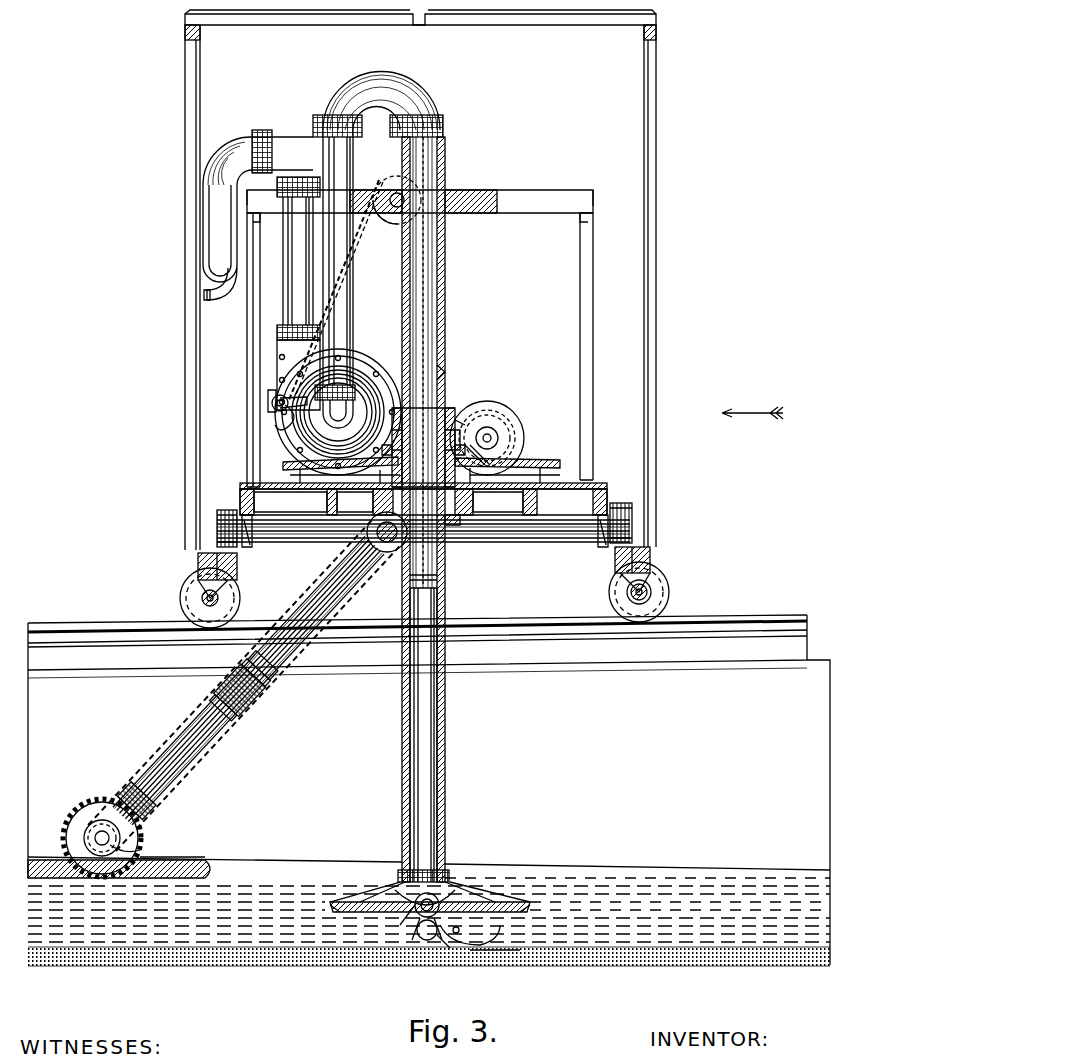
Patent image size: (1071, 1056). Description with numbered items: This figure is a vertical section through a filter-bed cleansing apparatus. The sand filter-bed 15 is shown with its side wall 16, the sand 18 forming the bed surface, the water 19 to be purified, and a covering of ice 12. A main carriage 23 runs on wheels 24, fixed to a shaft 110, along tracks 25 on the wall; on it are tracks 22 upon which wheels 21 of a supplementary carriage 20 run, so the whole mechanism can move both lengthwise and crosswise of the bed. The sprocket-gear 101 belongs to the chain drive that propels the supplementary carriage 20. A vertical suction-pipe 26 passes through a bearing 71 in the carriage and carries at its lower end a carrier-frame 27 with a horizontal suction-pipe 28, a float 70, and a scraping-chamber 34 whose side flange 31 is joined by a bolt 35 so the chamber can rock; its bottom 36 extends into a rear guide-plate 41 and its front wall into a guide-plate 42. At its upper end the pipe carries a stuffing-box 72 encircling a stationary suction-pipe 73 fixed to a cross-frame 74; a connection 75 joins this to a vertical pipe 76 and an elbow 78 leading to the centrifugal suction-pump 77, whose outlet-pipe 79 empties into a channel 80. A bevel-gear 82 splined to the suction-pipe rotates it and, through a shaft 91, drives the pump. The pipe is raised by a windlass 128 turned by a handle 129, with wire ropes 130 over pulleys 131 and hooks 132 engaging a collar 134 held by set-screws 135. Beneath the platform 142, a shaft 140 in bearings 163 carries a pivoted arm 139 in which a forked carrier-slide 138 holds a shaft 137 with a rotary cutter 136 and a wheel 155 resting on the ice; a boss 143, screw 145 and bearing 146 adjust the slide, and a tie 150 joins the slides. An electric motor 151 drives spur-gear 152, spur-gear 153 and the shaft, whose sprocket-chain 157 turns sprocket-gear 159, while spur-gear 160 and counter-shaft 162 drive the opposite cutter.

The ice 12 is at (205, 857).
The sand filter-bed 15 is at (429, 910).
The side wall 16 is at (565, 668).
The sand 18 is at (622, 967).
The water 19 is at (622, 870).
The supplementary carriage 20 is at (582, 250).
The wheel 21 is at (222, 530).
The track 22 is at (205, 565).
The main carriage 23 is at (657, 400).
The wheel 24 is at (205, 598).
The track 25 is at (50, 625).
The vertical suction-pipe 26 is at (446, 716).
The carrier-frame 27 is at (478, 895).
The horizontal suction-pipe 28 is at (424, 913).
The straight vertical side flange 31 is at (428, 920).
The scraping-chamber 34 is at (434, 940).
The bolt 35 is at (472, 935).
The bottom 36 is at (448, 945).
The rear guide-plate 41 is at (416, 912).
The guide-plate 42 is at (500, 952).
The float 70 is at (400, 910).
The bearing 71 is at (445, 522).
The stuffing-box 72 is at (437, 412).
The stationary suction-pipe 73 is at (446, 290).
The cross-frame 74 is at (488, 192).
The connection 75 is at (425, 90).
The vertical pipe 76 is at (350, 318).
The centrifugal suction-pump 77 is at (300, 440).
The elbow 78 is at (362, 395).
The outlet-pipe 79 is at (297, 300).
The channel 80 is at (215, 265).
The bevel-gear 82 is at (540, 459).
The shaft 91 is at (355, 501).
The sprocket-gear 101 is at (372, 542).
The shaft 110 is at (635, 592).
The windlass 128 is at (268, 400).
The handle 129 is at (285, 420).
The wire rope 130 is at (362, 250).
The pulley 131 is at (395, 185).
The hook 132 is at (446, 372).
The collar 134 is at (455, 452).
The set-screw 135 is at (492, 438).
The rotary cutter 136 is at (140, 858).
The shaft 137 is at (92, 838).
The forked carrier-slide 138 is at (196, 772).
The arm 139 is at (266, 694).
The shaft 140 is at (498, 502).
The platform 142 is at (600, 488).
The boss 143 is at (240, 680).
The screw 145 is at (250, 660).
The bearing 146 is at (230, 702).
The tie 150 is at (135, 795).
The electric motor 151 is at (505, 420).
The spur-gear 152 is at (500, 432).
The spur-gear 153 is at (447, 425).
The wheel 155 is at (85, 820).
The sprocket-chain 157 is at (226, 742).
The sprocket-gear 159 is at (120, 848).
The spur-gear 160 is at (445, 580).
The counter-shaft 162 is at (383, 580).
The bearing 163 is at (290, 502).